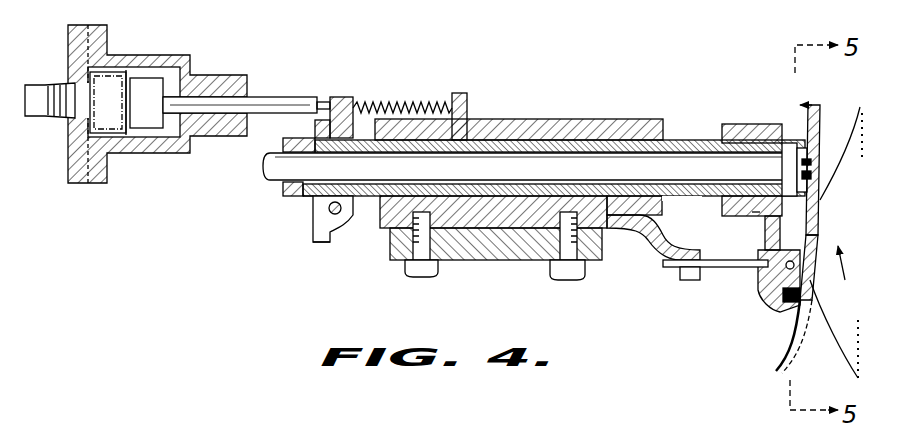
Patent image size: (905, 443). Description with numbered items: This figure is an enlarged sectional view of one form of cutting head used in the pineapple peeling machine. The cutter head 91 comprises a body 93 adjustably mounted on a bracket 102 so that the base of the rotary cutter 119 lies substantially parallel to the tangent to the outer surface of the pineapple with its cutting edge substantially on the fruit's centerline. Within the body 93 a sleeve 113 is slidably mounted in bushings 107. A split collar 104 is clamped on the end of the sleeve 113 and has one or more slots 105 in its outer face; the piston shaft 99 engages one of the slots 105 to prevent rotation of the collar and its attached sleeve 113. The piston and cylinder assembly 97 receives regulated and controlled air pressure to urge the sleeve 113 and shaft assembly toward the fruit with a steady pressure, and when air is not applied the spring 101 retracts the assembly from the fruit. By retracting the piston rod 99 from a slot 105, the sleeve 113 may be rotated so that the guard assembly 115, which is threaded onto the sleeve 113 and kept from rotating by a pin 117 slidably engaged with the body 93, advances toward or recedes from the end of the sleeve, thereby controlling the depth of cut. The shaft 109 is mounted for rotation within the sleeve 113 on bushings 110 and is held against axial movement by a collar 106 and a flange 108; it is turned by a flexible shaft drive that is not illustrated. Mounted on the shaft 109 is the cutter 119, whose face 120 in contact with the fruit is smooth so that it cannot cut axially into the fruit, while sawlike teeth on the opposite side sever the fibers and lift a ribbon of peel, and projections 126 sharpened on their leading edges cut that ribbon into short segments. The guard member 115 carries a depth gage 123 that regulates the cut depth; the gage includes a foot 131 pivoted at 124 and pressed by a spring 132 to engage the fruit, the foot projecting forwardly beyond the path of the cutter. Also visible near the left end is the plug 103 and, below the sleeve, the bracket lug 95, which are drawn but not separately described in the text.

The cutter head 91 is at (600, 95).
The body 93 is at (610, 121).
The mounting bracket 95 is at (330, 209).
The piston and cylinder assembly 97 is at (197, 52).
The piston shaft 99 is at (265, 97).
The spring 101 is at (388, 103).
The bracket 102 is at (507, 258).
The adjusting plug 103 is at (43, 82).
The split collar 104 is at (319, 243).
The slots 105 is at (323, 97).
The collar 106 is at (282, 184).
The bushings 107 is at (383, 214).
The flange 108 is at (803, 150).
The shaft 109 is at (518, 165).
The bushings 110 is at (310, 195).
The sleeve 113 is at (697, 144).
The guard assembly 115 is at (757, 122).
The pin 117 is at (728, 270).
The rotary cutter 119 is at (818, 121).
The face 120 is at (823, 191).
The depth gage 123 is at (807, 327).
The pivot 124 is at (787, 268).
The projections 126 is at (811, 103).
The foot 131 is at (812, 292).
The spring 132 is at (787, 310).